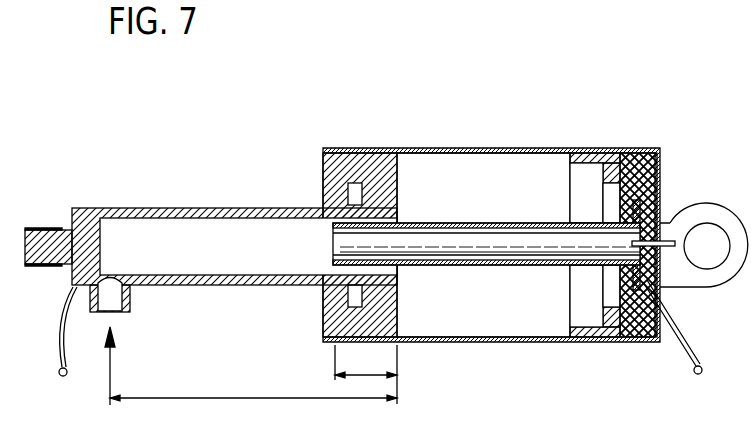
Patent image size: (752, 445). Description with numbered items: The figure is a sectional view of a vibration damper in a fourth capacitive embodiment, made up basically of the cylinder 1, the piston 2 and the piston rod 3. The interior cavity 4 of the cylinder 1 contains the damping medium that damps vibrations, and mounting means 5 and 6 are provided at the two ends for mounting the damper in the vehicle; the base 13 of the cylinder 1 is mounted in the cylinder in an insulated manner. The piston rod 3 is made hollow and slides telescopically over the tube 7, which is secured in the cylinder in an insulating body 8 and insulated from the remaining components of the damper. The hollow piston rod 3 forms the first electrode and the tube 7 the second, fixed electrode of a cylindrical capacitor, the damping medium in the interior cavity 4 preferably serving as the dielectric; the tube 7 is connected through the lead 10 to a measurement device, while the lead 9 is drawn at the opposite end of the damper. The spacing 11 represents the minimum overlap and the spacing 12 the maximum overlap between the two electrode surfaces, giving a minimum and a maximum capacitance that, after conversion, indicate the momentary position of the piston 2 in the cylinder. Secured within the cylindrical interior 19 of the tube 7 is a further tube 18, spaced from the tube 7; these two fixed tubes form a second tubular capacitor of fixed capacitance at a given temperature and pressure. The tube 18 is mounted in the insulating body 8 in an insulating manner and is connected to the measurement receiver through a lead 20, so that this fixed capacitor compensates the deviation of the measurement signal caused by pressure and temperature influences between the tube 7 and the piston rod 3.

The cylinder 1 is at (437, 150).
The piston 2 is at (375, 150).
The piston rod 3 is at (166, 210).
The interior cavity 4 is at (478, 175).
The mounting means 5 is at (43, 228).
The mounting means 6 is at (710, 204).
The tube 7 is at (514, 224).
The insulating body 8 is at (630, 155).
The electrical lead 9 is at (61, 376).
The lead 10 is at (696, 374).
The spacing 11 is at (372, 364).
The spacing 12 is at (242, 398).
The base 13 is at (663, 215).
The further tube 18 is at (549, 237).
The cylindrical interior 19 is at (583, 233).
The lead 20 is at (656, 290).